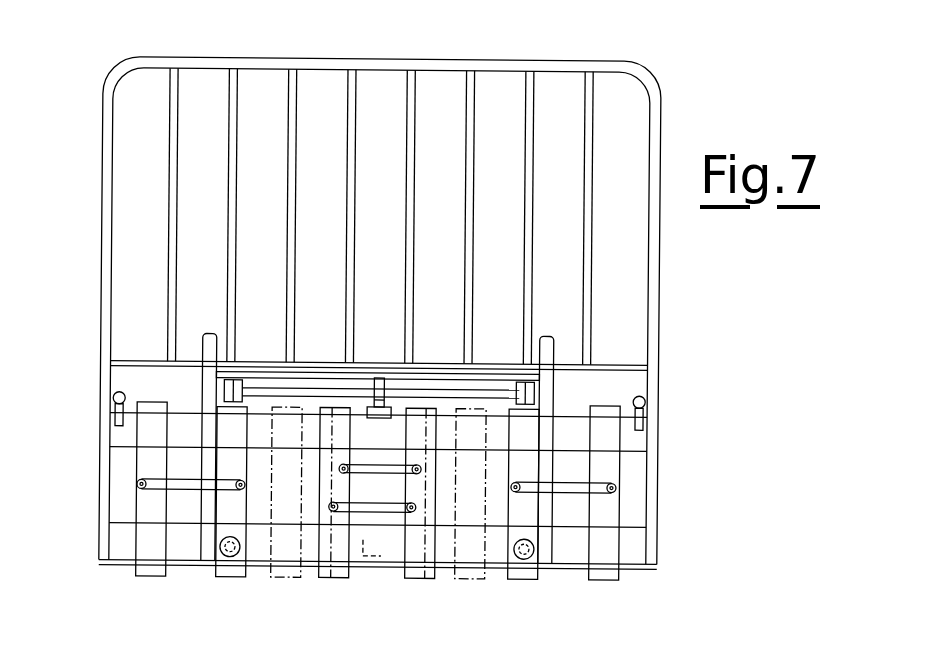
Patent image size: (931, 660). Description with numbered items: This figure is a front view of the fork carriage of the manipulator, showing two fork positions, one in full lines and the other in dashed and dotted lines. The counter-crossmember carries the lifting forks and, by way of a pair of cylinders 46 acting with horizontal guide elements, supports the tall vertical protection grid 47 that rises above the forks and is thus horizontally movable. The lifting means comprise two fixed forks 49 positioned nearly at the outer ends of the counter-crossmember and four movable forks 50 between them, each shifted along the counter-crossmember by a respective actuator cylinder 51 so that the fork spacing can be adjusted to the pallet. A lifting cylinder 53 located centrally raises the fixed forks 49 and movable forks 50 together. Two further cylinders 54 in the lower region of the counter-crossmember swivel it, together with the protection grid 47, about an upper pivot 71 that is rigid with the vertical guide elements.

The cylinders 46 is at (641, 403).
The vertical protection grid 47 is at (436, 69).
The fixed forks 49 is at (152, 508).
The movable forks 50 is at (223, 570).
The actuator cylinders 51 is at (185, 480).
The lifting cylinder 53 is at (367, 558).
The cylinders 54 is at (243, 548).
The upper pivot 71 is at (528, 393).